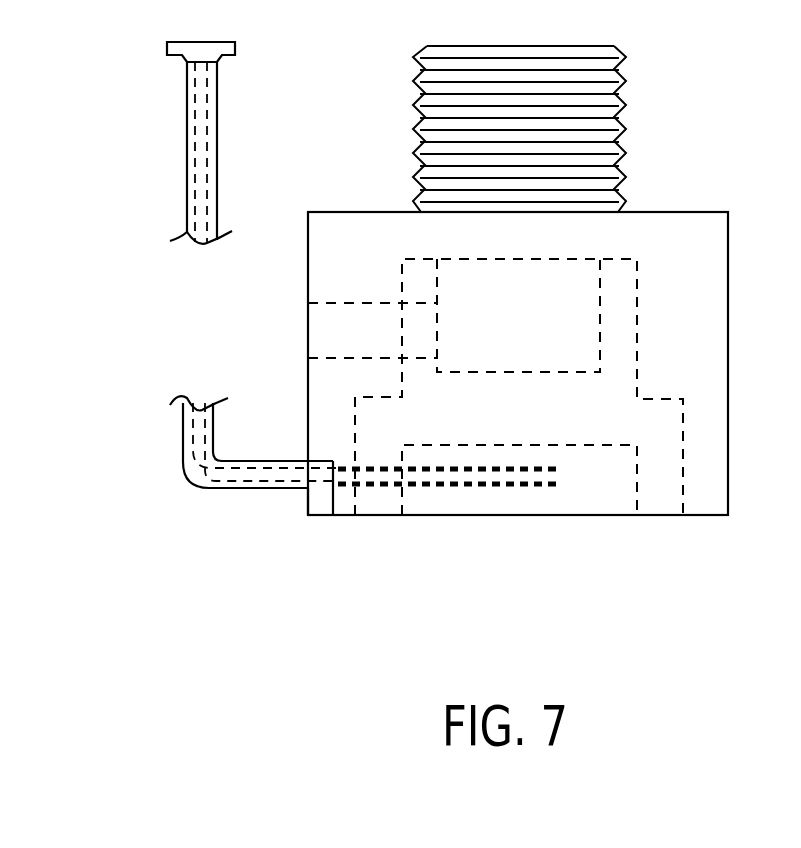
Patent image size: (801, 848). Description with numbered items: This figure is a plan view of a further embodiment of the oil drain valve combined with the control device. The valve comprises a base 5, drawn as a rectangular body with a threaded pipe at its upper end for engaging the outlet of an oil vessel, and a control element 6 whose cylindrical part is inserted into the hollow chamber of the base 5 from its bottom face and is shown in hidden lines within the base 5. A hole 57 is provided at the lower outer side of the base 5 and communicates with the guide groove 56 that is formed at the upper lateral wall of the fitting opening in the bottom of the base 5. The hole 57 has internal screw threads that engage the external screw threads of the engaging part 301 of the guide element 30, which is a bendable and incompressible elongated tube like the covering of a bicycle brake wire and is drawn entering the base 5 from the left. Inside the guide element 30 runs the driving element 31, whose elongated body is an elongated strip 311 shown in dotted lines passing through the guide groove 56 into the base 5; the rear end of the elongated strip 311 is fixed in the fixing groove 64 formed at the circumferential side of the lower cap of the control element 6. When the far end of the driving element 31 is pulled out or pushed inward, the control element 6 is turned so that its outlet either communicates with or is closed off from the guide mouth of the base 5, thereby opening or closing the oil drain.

The base 5 is at (640, 201).
The control element 6 is at (673, 432).
The guide element 30 is at (188, 181).
The driving element 31 is at (200, 133).
The engaging part 301 is at (320, 462).
The elongated strip 311 is at (543, 486).
The guide groove 56 is at (341, 488).
The hole 57 is at (330, 491).
The fixing groove 64 is at (557, 486).